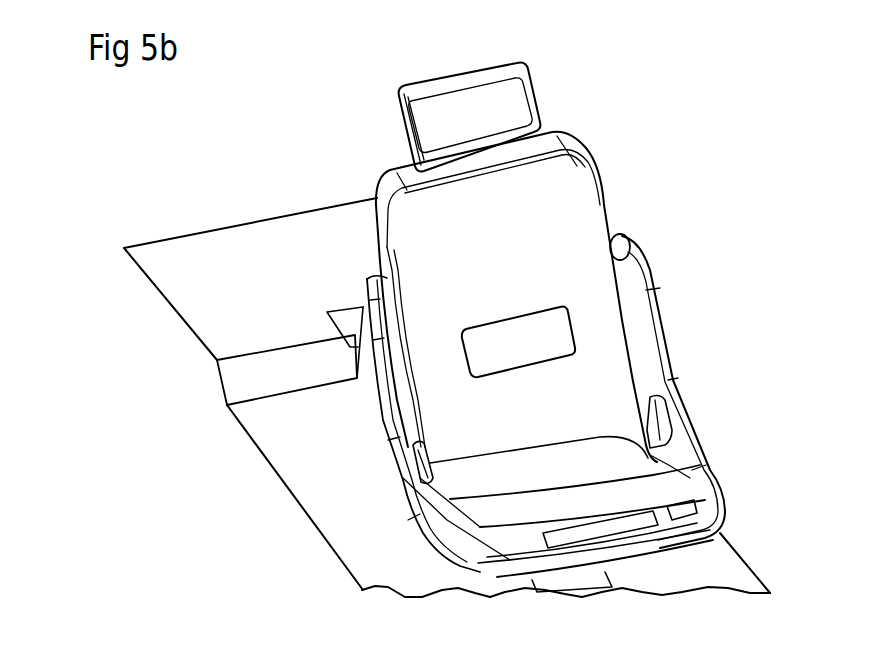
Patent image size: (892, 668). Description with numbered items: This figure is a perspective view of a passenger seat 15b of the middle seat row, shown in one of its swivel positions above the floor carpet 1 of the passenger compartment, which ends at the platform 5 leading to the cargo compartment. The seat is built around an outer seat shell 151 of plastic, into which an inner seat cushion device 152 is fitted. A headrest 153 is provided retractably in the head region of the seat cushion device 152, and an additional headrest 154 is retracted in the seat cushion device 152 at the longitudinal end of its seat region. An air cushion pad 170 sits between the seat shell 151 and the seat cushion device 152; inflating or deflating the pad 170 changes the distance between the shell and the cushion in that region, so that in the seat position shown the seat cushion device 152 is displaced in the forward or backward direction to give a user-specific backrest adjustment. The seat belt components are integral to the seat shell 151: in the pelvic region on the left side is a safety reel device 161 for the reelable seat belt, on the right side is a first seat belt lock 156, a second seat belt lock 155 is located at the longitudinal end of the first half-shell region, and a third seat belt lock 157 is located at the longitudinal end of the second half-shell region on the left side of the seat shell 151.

The floor carpet 1 is at (285, 453).
The platform 5 is at (198, 308).
The passenger seat 15b is at (663, 343).
The outer seat shell 151 is at (630, 285).
The seat cushion device 152 is at (571, 177).
The headrest 153 is at (522, 97).
The additional headrest 154 is at (630, 527).
The second seat belt lock 155 is at (693, 508).
The first seat belt lock 156 is at (403, 475).
The third seat belt lock 157 is at (617, 238).
The safety reel device 161 is at (668, 445).
The air cushion pad 170 is at (557, 337).